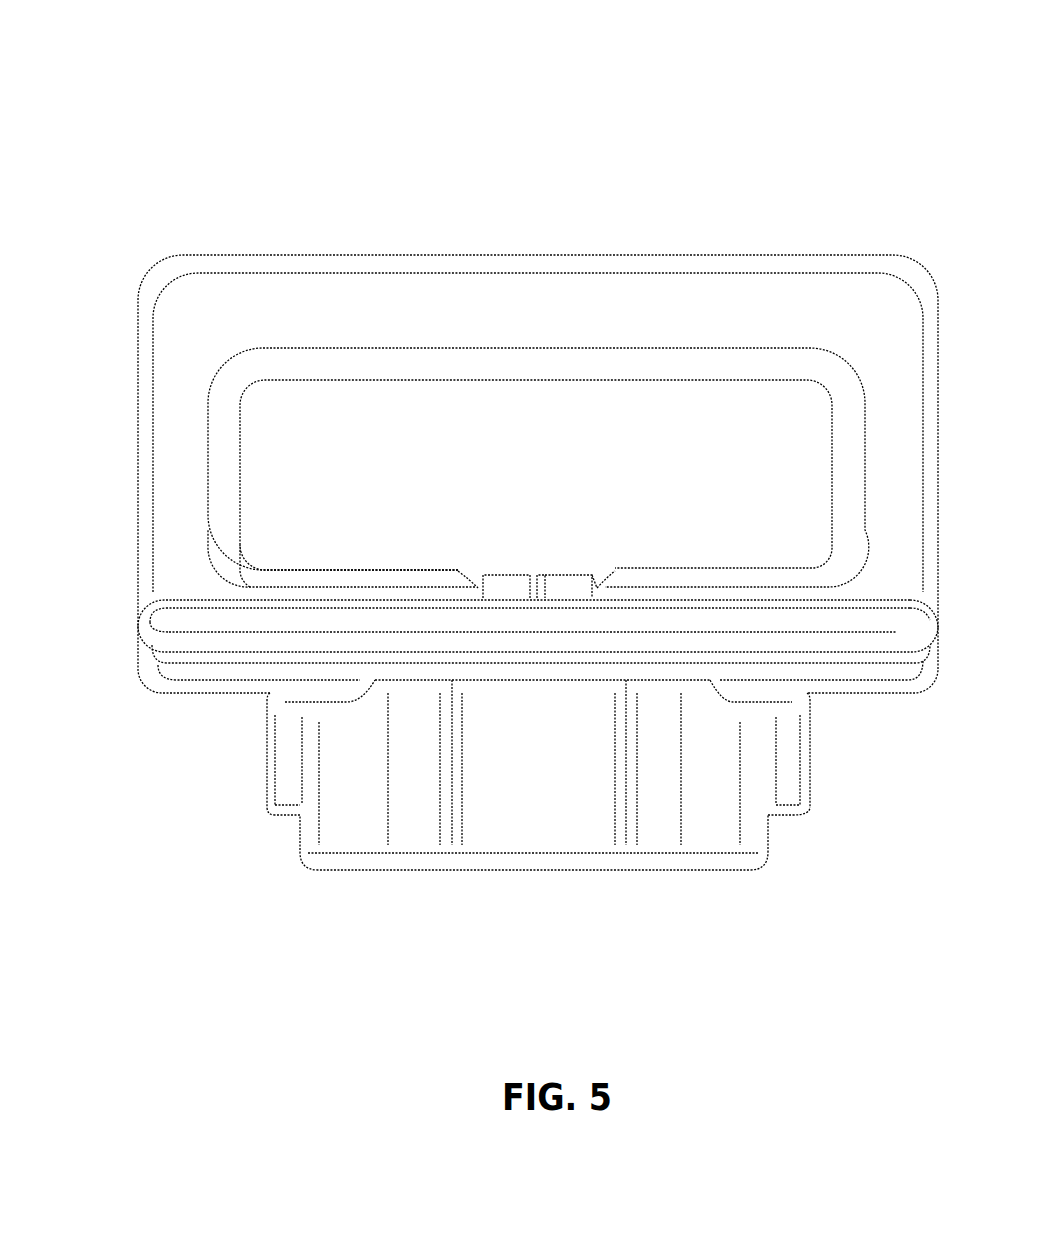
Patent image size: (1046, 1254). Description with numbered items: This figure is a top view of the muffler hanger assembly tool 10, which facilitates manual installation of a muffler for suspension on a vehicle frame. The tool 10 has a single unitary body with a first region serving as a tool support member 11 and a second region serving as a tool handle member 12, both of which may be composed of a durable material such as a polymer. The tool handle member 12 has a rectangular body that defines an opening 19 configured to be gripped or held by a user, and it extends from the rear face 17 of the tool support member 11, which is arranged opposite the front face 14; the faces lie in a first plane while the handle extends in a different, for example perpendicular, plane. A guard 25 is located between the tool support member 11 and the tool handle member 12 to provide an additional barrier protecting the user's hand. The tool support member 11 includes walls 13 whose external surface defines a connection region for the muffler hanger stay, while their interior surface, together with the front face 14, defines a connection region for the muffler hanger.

The tool 10 is at (150, 140).
The tool handle member 12 is at (808, 305).
The opening 19 is at (358, 435).
The rear face 17 is at (223, 600).
The guard 25 is at (173, 638).
The walls 13 is at (575, 820).
The tool support member 11 is at (790, 755).
The front face 14 is at (790, 815).